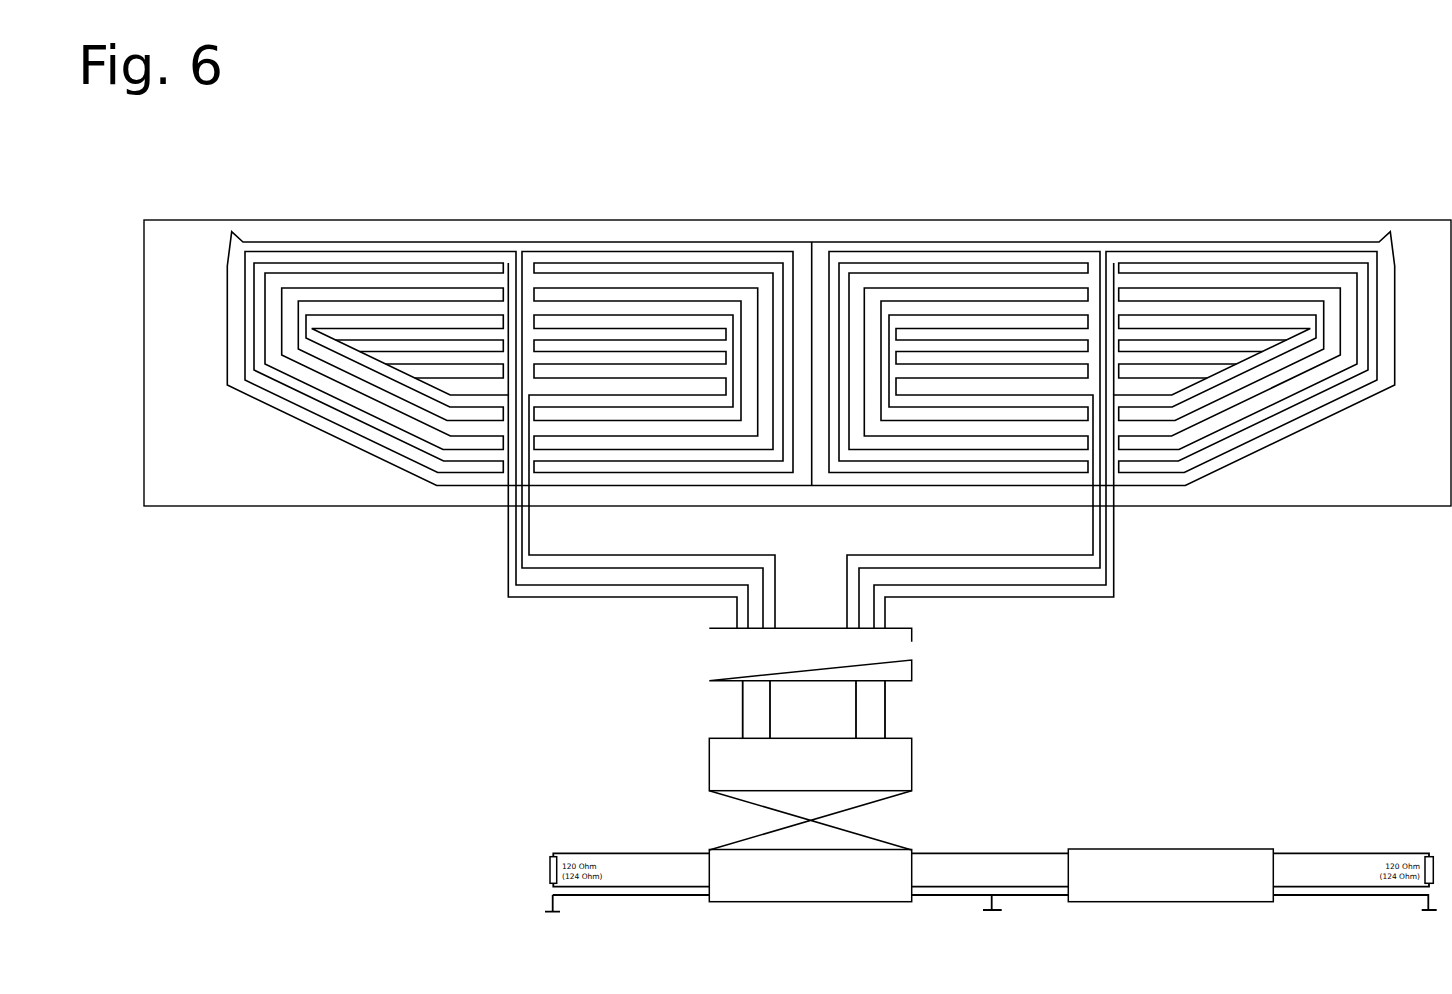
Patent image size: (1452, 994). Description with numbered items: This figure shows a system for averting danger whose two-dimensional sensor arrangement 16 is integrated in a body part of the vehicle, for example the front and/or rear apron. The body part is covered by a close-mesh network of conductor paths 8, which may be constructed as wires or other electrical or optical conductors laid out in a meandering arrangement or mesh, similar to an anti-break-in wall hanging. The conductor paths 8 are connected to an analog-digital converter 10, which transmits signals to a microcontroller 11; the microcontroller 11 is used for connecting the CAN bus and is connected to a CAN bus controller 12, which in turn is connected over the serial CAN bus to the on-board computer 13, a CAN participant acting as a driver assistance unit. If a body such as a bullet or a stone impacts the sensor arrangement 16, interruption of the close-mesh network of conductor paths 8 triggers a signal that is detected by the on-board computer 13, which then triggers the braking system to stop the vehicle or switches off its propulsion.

The two-dimensional sensor arrangement 16 is at (1104, 218).
The conductor paths 8 is at (1285, 290).
The analog-digital converter 10 is at (810, 654).
The microcontroller 11 is at (810, 764).
The CAN bus controller 12 is at (810, 876).
The on-board computer 13 is at (1170, 875).